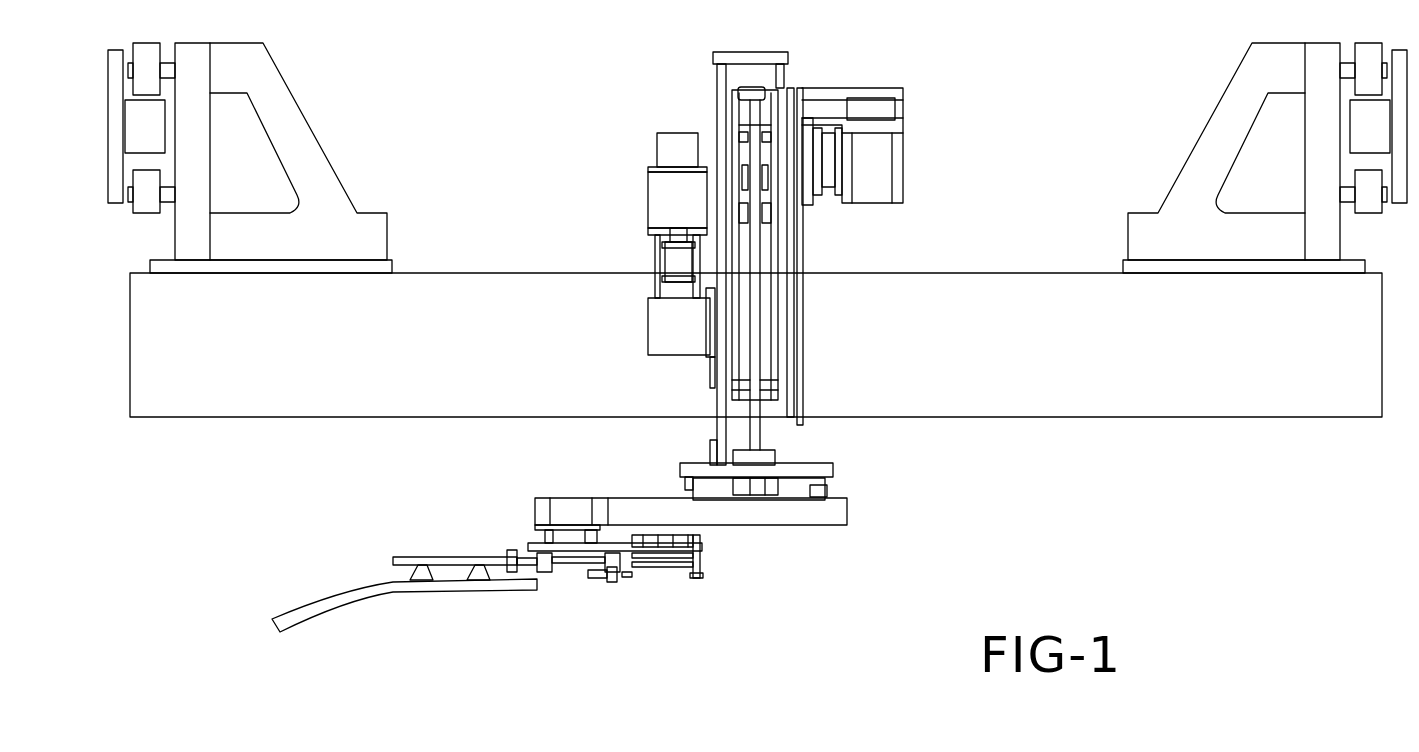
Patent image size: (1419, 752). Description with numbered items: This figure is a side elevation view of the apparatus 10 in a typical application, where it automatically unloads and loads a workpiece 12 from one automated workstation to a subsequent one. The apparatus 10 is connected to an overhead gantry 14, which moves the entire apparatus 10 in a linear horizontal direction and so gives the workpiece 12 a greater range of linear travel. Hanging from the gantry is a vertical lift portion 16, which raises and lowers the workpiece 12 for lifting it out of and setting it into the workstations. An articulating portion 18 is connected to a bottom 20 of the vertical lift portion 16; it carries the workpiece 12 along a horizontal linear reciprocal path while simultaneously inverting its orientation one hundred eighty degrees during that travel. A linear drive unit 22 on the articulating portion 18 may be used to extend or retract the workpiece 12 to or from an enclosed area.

The apparatus 10 is at (862, 64).
The workpiece 12 is at (297, 617).
The overhead gantry 14 is at (1210, 402).
The vertical lift portion 16 is at (812, 317).
The articulating portion 18 is at (709, 548).
The bottom of the vertical lift portion 20 is at (814, 488).
The linear drive unit 22 is at (637, 567).